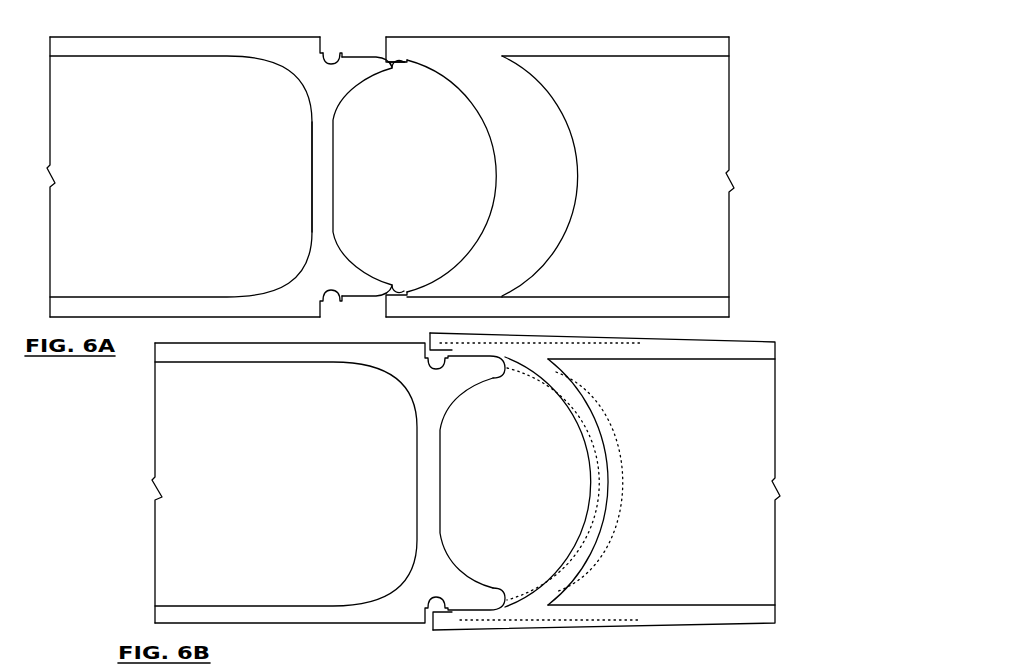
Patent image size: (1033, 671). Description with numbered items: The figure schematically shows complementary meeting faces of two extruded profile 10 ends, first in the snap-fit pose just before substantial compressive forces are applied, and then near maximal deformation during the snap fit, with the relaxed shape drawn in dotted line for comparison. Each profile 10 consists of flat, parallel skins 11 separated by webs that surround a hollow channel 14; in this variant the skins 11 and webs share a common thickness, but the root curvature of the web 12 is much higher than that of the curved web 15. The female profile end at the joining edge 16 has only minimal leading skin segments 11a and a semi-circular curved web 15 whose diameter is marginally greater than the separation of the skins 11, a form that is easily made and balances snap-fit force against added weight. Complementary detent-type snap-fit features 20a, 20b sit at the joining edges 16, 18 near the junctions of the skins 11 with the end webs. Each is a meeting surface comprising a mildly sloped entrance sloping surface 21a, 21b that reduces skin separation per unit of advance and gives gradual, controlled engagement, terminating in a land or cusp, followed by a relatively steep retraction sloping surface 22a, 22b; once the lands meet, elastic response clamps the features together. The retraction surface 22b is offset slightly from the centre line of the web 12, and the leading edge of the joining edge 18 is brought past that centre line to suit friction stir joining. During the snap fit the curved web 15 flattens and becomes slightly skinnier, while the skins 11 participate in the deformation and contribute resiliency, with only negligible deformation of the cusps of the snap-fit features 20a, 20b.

The profile 10 is at (190, 28).
The skins 11 is at (173, 51).
The leading skin segments 11a is at (473, 315).
The web 12 is at (325, 155).
The hollow channel 14 is at (100, 199).
The curved web 15 is at (568, 170).
The joining edge 16 is at (403, 160).
The joining edge 18 is at (400, 220).
The snap-fit feature 20a is at (396, 56).
The snap-fit feature 20b is at (331, 52).
The entrance sloping surface 21a is at (400, 71).
The entrance sloping surface 21b is at (360, 54).
The retraction sloping surface 22a is at (409, 63).
The retraction sloping surface 22b is at (331, 57).